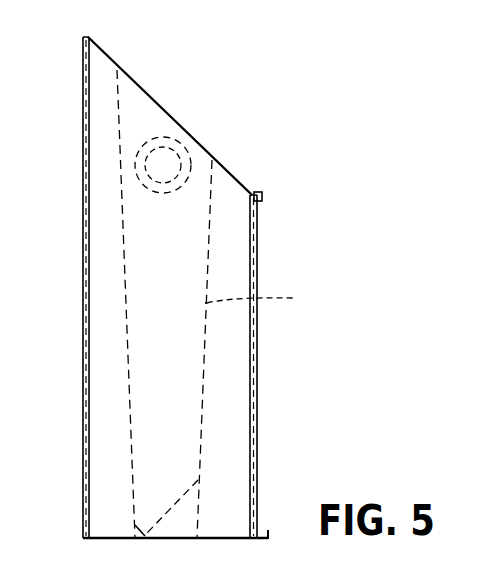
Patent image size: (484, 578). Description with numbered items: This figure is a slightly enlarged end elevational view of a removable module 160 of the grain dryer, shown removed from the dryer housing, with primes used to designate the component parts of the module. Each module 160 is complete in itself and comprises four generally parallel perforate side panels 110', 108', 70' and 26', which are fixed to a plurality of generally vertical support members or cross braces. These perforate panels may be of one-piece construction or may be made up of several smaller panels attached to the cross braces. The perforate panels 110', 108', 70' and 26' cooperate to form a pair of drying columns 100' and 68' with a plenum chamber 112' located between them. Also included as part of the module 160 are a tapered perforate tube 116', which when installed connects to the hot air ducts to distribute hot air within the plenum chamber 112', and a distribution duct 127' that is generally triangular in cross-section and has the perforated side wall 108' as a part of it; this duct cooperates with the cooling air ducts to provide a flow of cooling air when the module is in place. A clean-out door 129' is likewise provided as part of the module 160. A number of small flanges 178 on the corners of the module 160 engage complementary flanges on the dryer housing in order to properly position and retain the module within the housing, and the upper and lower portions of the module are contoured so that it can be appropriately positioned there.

The perforate side panel 26' is at (59, 287).
The perforate side panel 70' is at (144, 456).
The drying column 68' is at (145, 141).
The perforate side panel 110' is at (288, 366).
The small flange 178 is at (258, 196).
The plenum chamber 112' is at (222, 304).
The drying column 100' is at (262, 349).
The perforate side panel 108' is at (270, 298).
The tapered perforate tube 116' is at (192, 147).
The distribution duct 127' is at (182, 522).
The clean-out door 129' is at (134, 544).
The removable module 160 is at (268, 398).